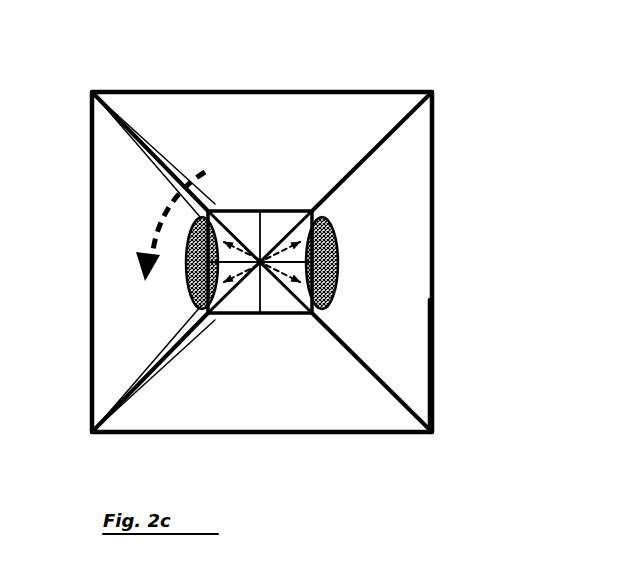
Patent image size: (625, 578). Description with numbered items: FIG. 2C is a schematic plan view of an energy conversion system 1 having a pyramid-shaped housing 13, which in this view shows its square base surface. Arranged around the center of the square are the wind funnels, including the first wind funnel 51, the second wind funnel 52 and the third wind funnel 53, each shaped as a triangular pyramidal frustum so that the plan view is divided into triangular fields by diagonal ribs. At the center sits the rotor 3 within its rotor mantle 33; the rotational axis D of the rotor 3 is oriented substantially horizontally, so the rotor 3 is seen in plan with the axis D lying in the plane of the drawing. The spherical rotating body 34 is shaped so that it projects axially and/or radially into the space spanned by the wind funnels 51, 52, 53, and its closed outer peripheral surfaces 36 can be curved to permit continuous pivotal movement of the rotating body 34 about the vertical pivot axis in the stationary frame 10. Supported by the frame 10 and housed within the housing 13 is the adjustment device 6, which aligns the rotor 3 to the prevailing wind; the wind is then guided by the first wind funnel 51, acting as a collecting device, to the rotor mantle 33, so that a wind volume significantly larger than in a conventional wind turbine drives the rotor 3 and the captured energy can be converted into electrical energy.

The energy conversion system 1 is at (446, 238).
The rotor 3 is at (266, 255).
The adjustment device 6 is at (216, 313).
The stationary frame 10 is at (378, 136).
The pyramid-shaped housing 13 is at (430, 378).
The rotor mantle 33 is at (257, 252).
The spherical rotating body 34 is at (332, 290).
The closed outer peripheral surfaces 36 is at (336, 262).
The first wind funnel 51 is at (230, 116).
The second wind funnel 52 is at (121, 325).
The third wind funnel 53 is at (405, 206).
The rotational axis D is at (264, 265).